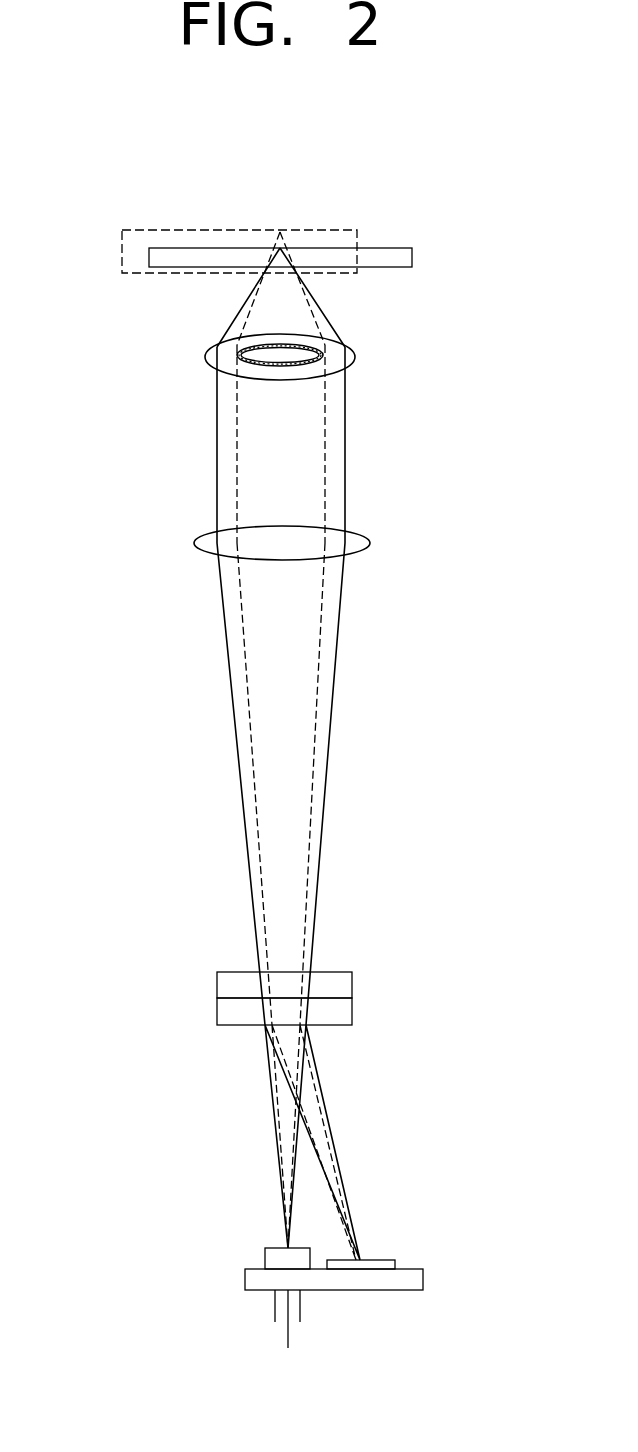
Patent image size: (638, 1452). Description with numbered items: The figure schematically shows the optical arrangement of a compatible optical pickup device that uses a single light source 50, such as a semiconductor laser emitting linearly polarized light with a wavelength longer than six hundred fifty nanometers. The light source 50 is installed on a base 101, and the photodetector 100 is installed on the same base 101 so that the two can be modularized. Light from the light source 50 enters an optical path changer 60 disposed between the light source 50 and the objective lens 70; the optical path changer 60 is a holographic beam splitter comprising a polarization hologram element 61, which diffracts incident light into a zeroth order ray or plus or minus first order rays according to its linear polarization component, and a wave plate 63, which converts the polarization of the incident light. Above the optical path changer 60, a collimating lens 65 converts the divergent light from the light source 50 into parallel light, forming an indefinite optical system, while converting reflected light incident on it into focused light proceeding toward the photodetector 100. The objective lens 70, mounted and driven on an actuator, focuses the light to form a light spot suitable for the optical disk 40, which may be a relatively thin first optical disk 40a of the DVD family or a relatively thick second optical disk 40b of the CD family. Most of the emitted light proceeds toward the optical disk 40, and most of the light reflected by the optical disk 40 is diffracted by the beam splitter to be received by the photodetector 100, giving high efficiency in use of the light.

The optical disk 40 is at (244, 242).
The first optical disk 40a is at (385, 260).
The second optical disk 40b is at (330, 230).
The objective lens 70 is at (187, 385).
The collimating lens 65 is at (370, 543).
The optical path changer 60 is at (271, 965).
The wave plate 63 is at (347, 980).
The polarization hologram element 61 is at (345, 1013).
The light source 50 is at (277, 1258).
The photodetector 100 is at (390, 1262).
The base 101 is at (393, 1282).